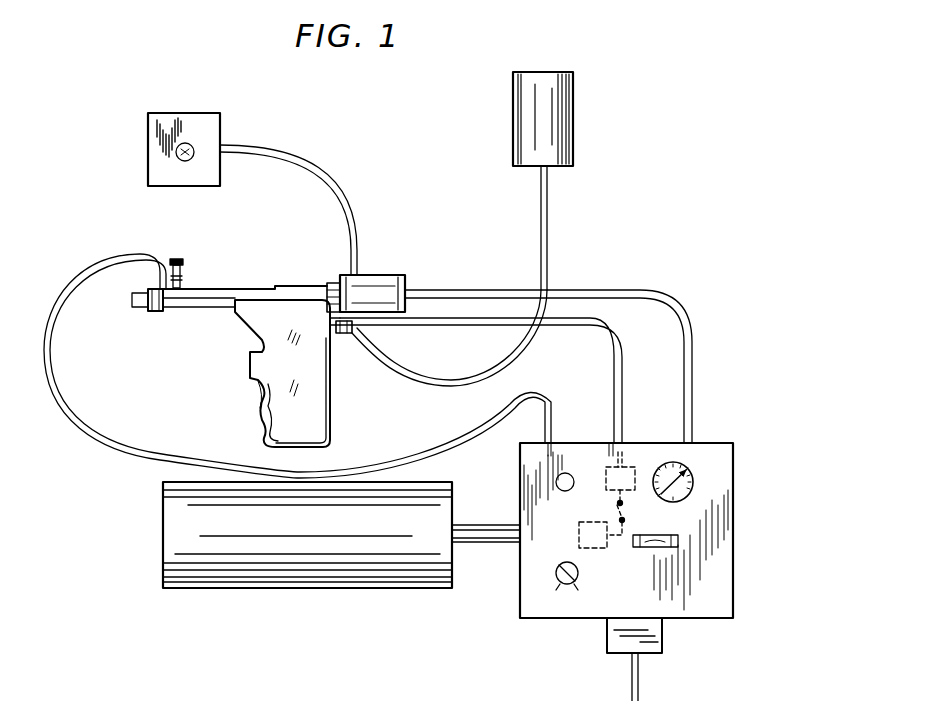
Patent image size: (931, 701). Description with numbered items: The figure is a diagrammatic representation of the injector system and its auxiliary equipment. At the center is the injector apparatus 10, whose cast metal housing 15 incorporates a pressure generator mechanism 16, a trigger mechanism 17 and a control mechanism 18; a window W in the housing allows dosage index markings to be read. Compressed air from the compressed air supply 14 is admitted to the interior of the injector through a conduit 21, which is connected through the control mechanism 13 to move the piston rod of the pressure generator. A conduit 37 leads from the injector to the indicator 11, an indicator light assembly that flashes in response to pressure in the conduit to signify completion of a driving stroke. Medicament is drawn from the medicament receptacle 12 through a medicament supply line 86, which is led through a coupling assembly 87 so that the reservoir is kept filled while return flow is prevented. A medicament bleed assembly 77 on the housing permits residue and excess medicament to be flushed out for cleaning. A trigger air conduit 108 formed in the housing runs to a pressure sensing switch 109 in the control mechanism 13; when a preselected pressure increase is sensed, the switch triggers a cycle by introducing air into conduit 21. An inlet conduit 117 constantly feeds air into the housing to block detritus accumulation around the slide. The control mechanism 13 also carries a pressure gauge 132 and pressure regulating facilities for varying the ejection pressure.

The injector apparatus 10 is at (283, 252).
The indicator 11 is at (190, 128).
The medicament receptacle 12 is at (568, 136).
The control mechanism 13 is at (722, 452).
The compressed air supply 14 is at (388, 590).
The housing 15 is at (204, 300).
The pressure generator mechanism 16 is at (325, 280).
The trigger mechanism 17 is at (160, 314).
The control mechanism 18 is at (269, 428).
The conduit 21 is at (427, 292).
The conduit 37 is at (359, 262).
The medicament bleed assembly 77 is at (188, 274).
The medicament supply line 86 is at (377, 348).
The coupling assembly 87 is at (343, 347).
The trigger air conduit 108 is at (428, 328).
The pressure sensing switch 109 is at (596, 481).
The inlet conduit 117 is at (166, 262).
The pressure gauge 132 is at (664, 463).
The window W is at (300, 284).